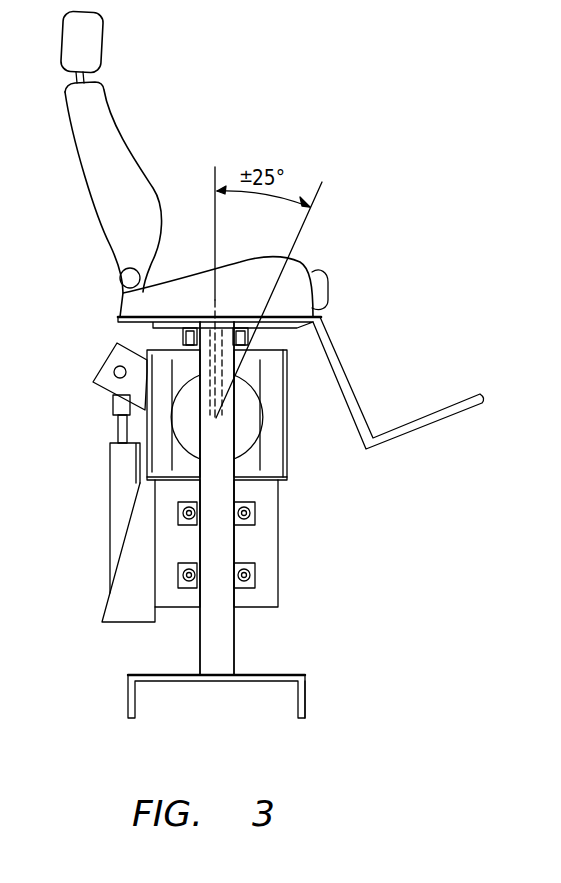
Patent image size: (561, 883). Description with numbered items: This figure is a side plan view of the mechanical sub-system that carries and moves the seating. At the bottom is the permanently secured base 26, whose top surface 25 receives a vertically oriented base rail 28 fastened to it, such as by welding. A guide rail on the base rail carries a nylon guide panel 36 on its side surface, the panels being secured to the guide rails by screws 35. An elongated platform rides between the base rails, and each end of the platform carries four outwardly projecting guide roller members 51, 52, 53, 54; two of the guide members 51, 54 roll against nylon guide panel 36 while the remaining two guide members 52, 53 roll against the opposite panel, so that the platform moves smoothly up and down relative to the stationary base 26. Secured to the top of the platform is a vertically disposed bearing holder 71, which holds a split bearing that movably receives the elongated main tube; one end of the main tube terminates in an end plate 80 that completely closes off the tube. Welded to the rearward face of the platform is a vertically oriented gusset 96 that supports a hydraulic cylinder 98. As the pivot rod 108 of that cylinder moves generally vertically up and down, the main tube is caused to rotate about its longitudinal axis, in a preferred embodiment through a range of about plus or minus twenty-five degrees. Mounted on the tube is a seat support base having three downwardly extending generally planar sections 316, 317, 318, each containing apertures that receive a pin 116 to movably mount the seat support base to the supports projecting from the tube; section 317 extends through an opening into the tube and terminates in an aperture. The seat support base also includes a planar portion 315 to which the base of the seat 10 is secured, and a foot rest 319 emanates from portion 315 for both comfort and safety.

The seat 10 is at (107, 133).
The top surface of base 25 is at (252, 675).
The base 26 is at (302, 676).
The base rail 28 is at (212, 470).
The screws 35 is at (197, 401).
The nylon guide panel 36 is at (247, 468).
The guide roller member 51 is at (252, 516).
The guide roller member 52 is at (181, 520).
The guide roller member 53 is at (188, 589).
The guide roller member 54 is at (256, 582).
The bearing holder 71 is at (281, 463).
The end plate 80 is at (258, 425).
The gusset 96 is at (116, 622).
The hydraulic cylinder 98 is at (118, 488).
The pivot rod 108 is at (118, 424).
The pin 116 is at (272, 342).
The planar portion 315 is at (233, 322).
The downwardly extending planar section 316 is at (163, 328).
The downwardly extending planar section 317 is at (274, 398).
The downwardly extending planar section 318 is at (248, 336).
The foot rest 319 is at (398, 383).